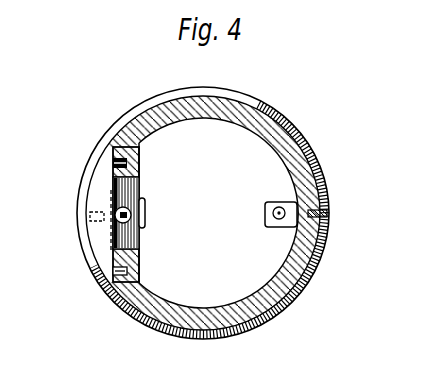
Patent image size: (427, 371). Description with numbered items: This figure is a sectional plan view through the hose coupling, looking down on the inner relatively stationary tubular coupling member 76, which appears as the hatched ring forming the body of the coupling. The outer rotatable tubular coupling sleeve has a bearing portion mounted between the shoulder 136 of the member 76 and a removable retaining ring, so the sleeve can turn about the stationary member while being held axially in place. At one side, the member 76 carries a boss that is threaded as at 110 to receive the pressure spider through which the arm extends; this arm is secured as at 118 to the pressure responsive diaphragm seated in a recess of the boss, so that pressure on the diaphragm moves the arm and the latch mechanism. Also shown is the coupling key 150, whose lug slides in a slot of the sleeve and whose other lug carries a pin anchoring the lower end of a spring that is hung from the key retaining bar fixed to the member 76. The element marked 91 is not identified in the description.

The inner relatively stationary tubular coupling member 76 is at (143, 113).
The shoulder of member 76 136 is at (80, 181).
The coupling key 150 is at (329, 198).
The threads of boss 108 110 is at (137, 244).
The mounting block 91 is at (270, 227).
The securing point of arm to diaphragm 118 is at (330, 213).